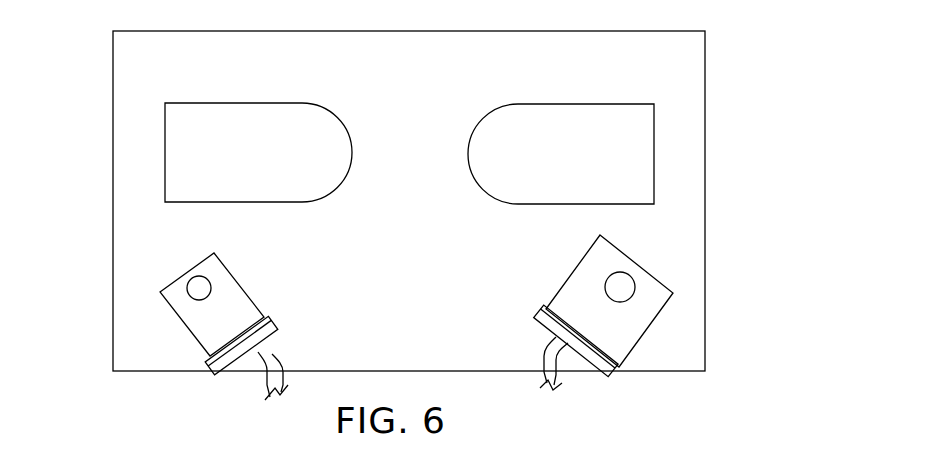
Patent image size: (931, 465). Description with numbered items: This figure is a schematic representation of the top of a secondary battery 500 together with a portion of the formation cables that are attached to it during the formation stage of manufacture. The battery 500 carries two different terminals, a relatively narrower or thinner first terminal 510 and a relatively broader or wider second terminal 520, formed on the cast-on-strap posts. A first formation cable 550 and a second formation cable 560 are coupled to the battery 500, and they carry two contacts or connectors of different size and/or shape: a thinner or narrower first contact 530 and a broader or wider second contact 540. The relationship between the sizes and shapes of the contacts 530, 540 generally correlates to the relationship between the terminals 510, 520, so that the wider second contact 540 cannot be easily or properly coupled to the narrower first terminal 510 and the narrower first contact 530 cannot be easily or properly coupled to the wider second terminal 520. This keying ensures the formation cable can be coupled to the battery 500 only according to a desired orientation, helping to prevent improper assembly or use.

The secondary battery 500 is at (734, 94).
The first terminal 510 is at (202, 335).
The second terminal 520 is at (578, 347).
The first contact 530 is at (209, 382).
The second contact 540 is at (632, 383).
The first formation cable 550 is at (253, 405).
The second formation cable 560 is at (577, 396).